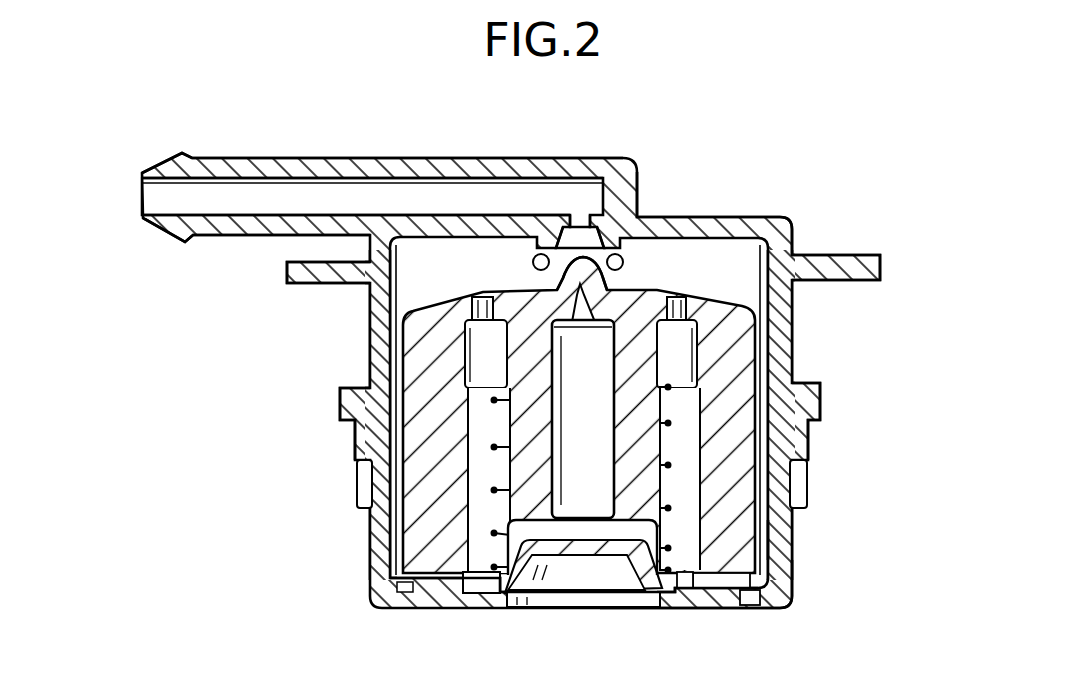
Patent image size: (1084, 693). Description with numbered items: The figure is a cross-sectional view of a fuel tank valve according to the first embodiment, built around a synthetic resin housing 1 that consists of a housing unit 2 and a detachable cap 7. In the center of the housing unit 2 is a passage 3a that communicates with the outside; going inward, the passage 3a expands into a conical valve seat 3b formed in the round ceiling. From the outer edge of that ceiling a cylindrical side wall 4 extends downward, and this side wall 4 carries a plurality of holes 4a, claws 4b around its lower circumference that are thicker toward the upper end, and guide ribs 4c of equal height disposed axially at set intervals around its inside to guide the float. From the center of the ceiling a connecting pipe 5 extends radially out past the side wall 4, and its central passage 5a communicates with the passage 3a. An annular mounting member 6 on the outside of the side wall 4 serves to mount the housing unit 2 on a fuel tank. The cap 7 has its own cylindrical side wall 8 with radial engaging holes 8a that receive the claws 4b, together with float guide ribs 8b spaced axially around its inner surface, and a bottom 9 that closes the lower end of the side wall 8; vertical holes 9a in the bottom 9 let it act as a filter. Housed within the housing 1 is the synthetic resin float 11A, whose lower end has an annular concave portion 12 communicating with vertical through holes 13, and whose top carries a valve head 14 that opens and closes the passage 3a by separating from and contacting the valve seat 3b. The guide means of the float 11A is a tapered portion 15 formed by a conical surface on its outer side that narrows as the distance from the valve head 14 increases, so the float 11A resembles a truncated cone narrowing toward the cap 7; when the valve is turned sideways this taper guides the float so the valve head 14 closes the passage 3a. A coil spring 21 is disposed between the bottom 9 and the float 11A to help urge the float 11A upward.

The housing 1 is at (356, 327).
The housing unit 2 is at (728, 201).
The passage 3a is at (583, 214).
The valve seat 3b is at (592, 241).
The side wall 4 is at (787, 345).
The holes 4a is at (534, 264).
The claws 4b is at (365, 462).
The guide ribs 4c is at (375, 353).
The connecting pipe 5 is at (301, 166).
The central passage 5a is at (228, 190).
The mounting member 6 is at (297, 272).
The cap 7 is at (797, 606).
The side wall 8 is at (378, 565).
The engaging holes 8a is at (365, 495).
The float guide ribs 8b is at (405, 600).
The bottom 9 is at (490, 600).
The vertical holes 9a is at (693, 600).
The float 11A is at (738, 372).
The concave portion 12 is at (687, 543).
The holes 13 is at (482, 300).
The valve head 14 is at (587, 267).
The tapered portion 15 is at (758, 442).
The coil spring 21 is at (647, 588).